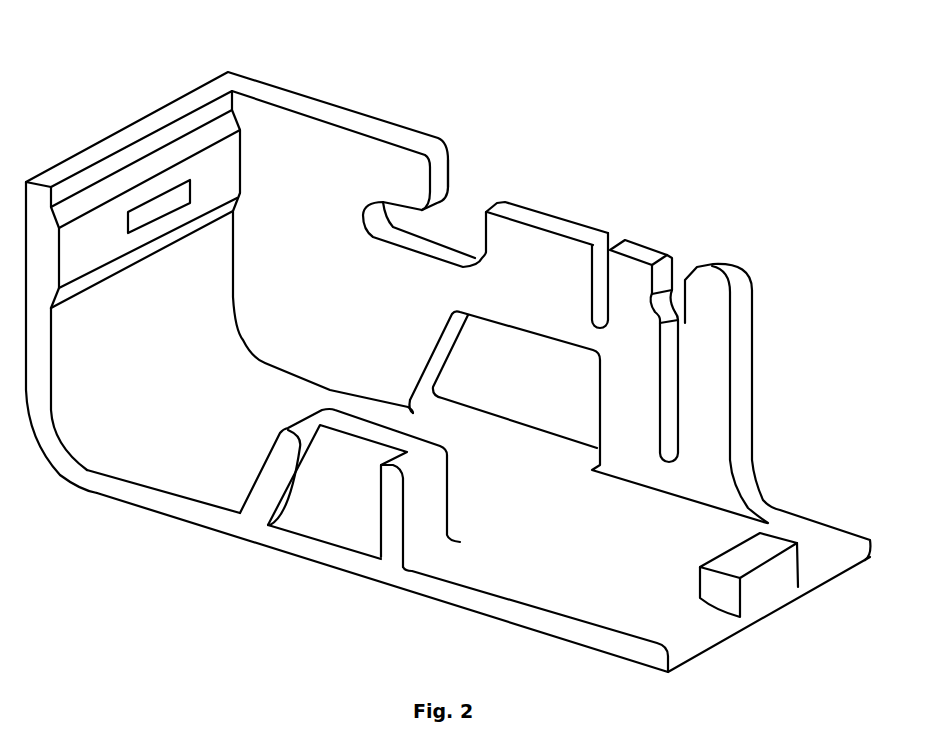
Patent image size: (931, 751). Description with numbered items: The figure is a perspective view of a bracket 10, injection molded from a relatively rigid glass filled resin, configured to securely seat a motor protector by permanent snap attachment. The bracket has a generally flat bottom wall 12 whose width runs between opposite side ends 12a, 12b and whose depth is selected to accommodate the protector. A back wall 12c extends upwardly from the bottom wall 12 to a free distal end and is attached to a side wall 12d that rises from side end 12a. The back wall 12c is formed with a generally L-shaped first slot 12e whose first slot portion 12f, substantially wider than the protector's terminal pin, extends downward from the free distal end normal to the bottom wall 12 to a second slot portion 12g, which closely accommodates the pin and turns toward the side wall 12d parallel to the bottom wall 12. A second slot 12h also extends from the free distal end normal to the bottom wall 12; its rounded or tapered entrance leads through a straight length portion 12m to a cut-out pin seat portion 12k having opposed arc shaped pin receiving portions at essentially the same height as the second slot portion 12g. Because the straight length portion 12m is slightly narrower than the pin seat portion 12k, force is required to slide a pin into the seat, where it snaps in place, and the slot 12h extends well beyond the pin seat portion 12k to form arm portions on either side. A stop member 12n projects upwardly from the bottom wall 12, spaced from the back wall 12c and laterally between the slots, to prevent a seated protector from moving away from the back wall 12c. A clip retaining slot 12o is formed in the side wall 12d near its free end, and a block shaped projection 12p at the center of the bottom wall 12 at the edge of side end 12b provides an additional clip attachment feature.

The bracket 10 is at (597, 140).
The bottom wall 12 is at (477, 573).
The side end 12a is at (103, 487).
The side end 12b is at (633, 653).
The back wall 12c is at (322, 152).
The side wall 12d is at (205, 255).
The first slot 12e is at (468, 172).
The first slot portion 12f is at (465, 227).
The second slot portion 12g is at (402, 218).
The second slot 12h is at (679, 258).
The pin seat portion 12k is at (650, 308).
The straight length portion 12m is at (693, 280).
The stop member 12n is at (448, 483).
The clip retaining slot 12o is at (150, 215).
The block shaped projection 12p is at (747, 568).